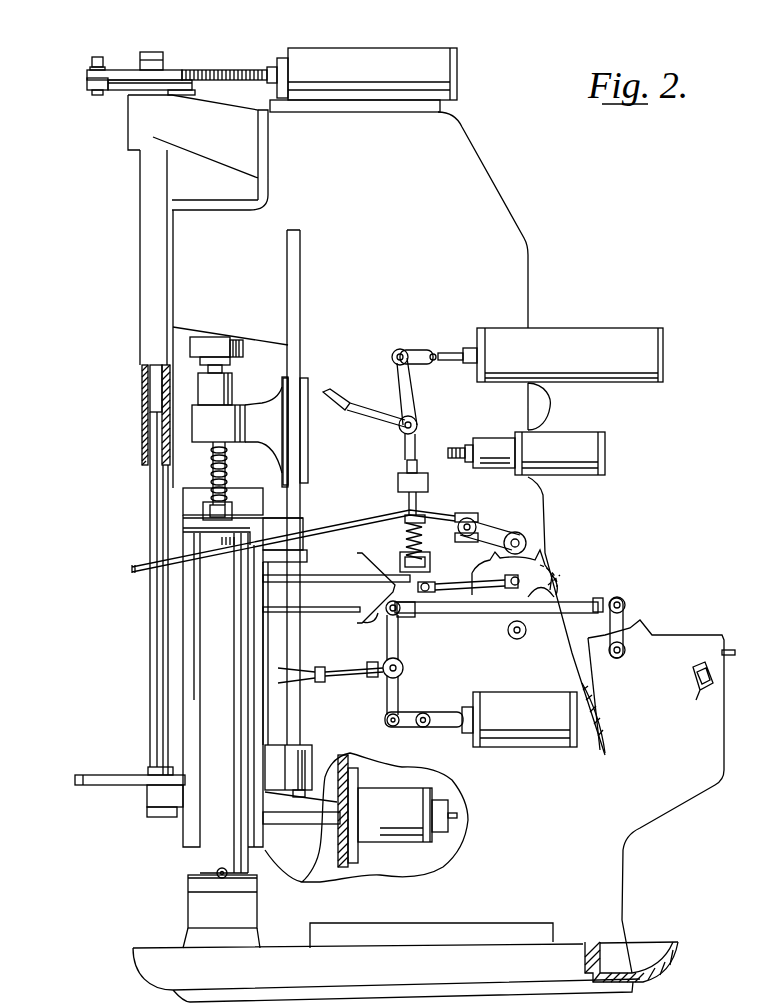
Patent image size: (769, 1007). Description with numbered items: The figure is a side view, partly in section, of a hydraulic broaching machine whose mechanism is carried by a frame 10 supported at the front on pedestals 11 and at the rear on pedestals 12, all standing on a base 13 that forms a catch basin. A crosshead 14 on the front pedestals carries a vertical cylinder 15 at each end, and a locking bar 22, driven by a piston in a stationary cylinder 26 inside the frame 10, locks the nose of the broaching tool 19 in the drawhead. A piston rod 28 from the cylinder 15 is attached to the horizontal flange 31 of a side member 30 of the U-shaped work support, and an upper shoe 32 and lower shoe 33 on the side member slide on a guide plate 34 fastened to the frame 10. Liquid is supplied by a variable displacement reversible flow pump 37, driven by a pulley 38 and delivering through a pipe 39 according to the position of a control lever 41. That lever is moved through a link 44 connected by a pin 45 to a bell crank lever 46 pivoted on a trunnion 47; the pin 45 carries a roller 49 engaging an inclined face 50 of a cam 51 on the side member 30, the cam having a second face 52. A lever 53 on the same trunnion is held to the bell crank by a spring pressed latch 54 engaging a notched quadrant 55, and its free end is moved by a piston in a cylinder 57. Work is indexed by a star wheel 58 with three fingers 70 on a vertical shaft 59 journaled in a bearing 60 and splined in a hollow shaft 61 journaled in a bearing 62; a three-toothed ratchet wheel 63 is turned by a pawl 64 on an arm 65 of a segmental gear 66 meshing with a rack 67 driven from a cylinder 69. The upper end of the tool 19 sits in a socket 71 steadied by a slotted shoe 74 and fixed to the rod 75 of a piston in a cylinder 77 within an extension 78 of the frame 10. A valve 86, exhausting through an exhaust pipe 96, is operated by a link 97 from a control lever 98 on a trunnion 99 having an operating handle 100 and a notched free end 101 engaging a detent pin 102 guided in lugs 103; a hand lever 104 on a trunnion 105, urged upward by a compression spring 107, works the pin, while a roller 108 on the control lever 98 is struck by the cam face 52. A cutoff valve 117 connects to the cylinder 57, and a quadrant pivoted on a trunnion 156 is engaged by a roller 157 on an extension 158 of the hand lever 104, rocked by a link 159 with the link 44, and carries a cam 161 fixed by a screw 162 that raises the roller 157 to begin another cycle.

The frame 10 is at (486, 197).
The front pedestal 11 is at (293, 938).
The rear pedestal 12 is at (610, 942).
The base 13 is at (650, 958).
The crosshead 14 is at (240, 912).
The vertical cylinder 15 is at (223, 694).
The broaching tool 19 is at (228, 468).
The locking bar 22 is at (295, 815).
The cylinder 26 is at (402, 815).
The piston rod 28 is at (228, 508).
The side member 30 is at (188, 837).
The horizontal flange 31 is at (200, 510).
The upper shoe 32 is at (310, 520).
The lower shoe 33 is at (300, 762).
The guide plate 34 is at (295, 276).
The variable displacement reversible flow pump 37 is at (660, 665).
The pulley 38 is at (604, 727).
The pipe 39 is at (690, 700).
The control lever 41 is at (625, 610).
The link 44 is at (485, 606).
The pin 45 is at (400, 612).
The bell crank lever 46 is at (398, 642).
The trunnion 47 is at (405, 669).
The roller 49 is at (385, 600).
The inclined face 50 is at (366, 622).
The cam 51 is at (363, 576).
The inclined face 52 is at (400, 562).
The lever 53 is at (398, 700).
The spring pressed latch 54 is at (370, 676).
The notched quadrant 55 is at (385, 652).
The cylinder 57 is at (519, 719).
The star wheel 58 is at (140, 762).
The vertical shaft 59 is at (150, 612).
The bearing 60 is at (155, 797).
The hollow shaft 61 is at (150, 207).
The bearing 62 is at (146, 125).
The three-toothed ratchet wheel 63 is at (160, 87).
The pawl 64 is at (120, 86).
The arm 65 is at (88, 73).
The segmental gear 66 is at (137, 72).
The rack 67 is at (237, 75).
The cylinder 69 is at (363, 80).
The finger 70 is at (86, 762).
The socket 71 is at (218, 407).
The slotted shoe 74 is at (265, 417).
The rod 75 is at (208, 371).
The cylinder 77 is at (212, 340).
The extension 78 is at (230, 293).
The valve 86 is at (563, 355).
The exhaust pipe 96 is at (733, 646).
The link 97 is at (420, 352).
The control lever 98 is at (397, 372).
The trunnion 99 is at (418, 422).
The operating handle 100 is at (332, 392).
The free end 101 is at (405, 438).
The detent pin 102 is at (407, 465).
The lug 103 is at (428, 484).
The hand lever 104 is at (145, 562).
The trunnion 105 is at (472, 522).
The compression spring 107 is at (425, 540).
The roller 108 is at (398, 350).
The cutoff valve 117 is at (526, 453).
The trunnion 156 is at (527, 631).
The roller 157 is at (527, 540).
The extension 158 is at (492, 537).
The link 159 is at (468, 590).
The cam 161 is at (545, 556).
The screw 162 is at (560, 580).